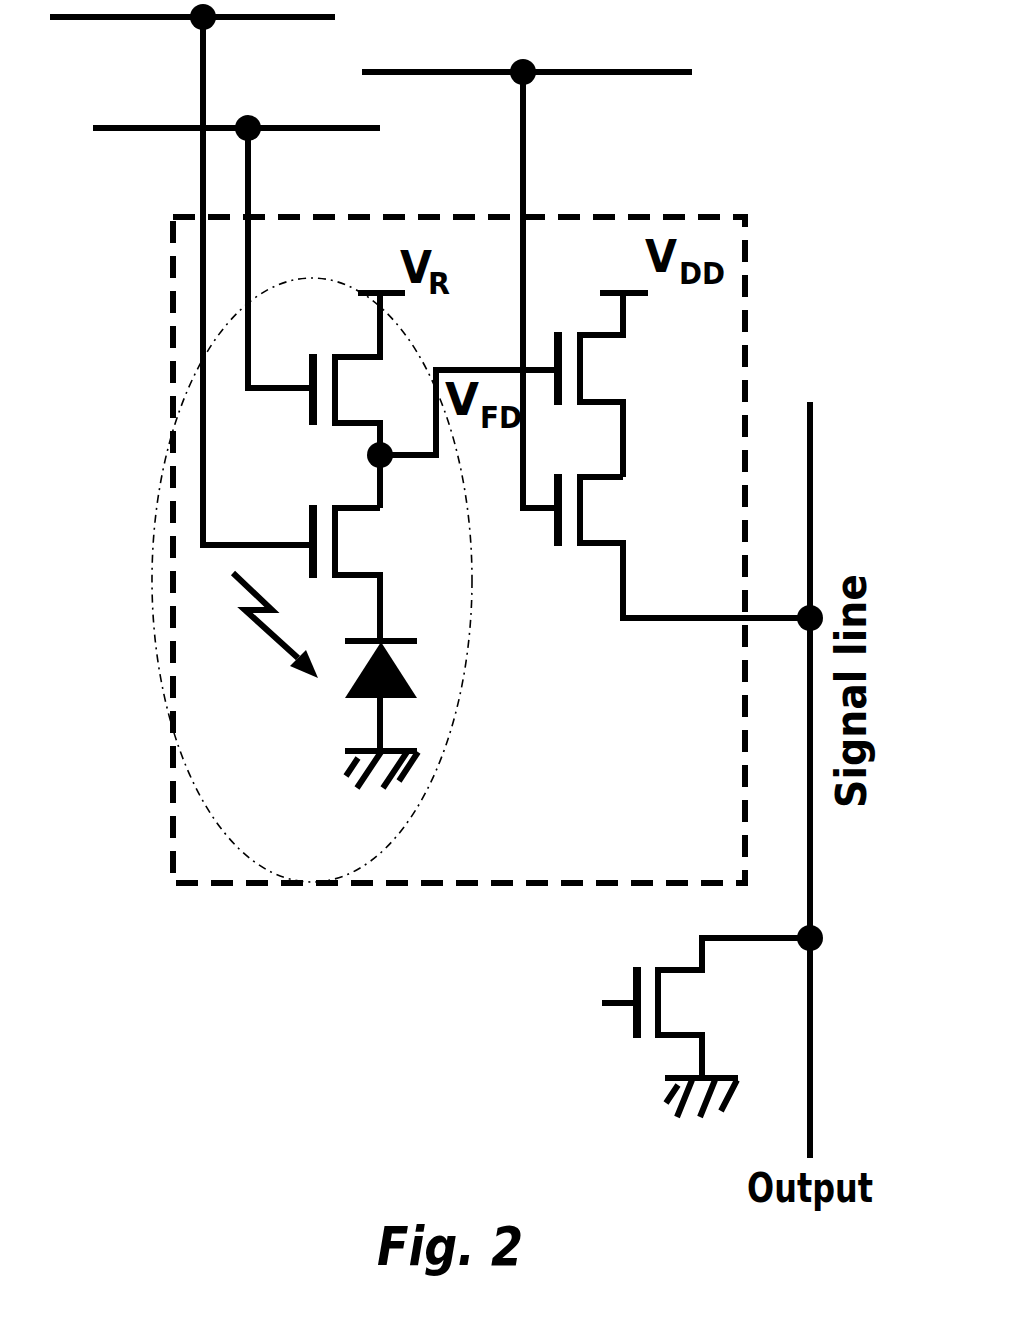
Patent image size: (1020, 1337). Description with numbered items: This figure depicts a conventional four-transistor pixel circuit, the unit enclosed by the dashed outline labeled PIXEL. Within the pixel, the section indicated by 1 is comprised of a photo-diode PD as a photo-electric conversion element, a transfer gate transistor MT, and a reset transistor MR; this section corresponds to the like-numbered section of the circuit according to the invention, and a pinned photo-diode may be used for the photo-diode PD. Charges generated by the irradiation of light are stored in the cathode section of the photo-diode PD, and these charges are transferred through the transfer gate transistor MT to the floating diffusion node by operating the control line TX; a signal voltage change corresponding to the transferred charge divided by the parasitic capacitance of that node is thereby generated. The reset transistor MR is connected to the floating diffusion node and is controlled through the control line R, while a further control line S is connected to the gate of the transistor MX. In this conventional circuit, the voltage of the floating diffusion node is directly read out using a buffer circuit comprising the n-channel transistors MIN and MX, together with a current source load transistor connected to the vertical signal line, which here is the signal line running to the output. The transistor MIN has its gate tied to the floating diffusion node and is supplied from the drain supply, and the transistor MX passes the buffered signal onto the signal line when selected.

The section comprising photo-diode, transfer gate transistor and reset transistor 1 is at (157, 672).
The control line TX is at (192, 274).
The reset control line R is at (236, 251).
The select control line S is at (527, 283).
The reset transistor MR is at (349, 400).
The transfer gate transistor MT is at (328, 547).
The n-channel transistor MIN is at (644, 385).
The n-channel transistor MX is at (684, 546).
The photo-diode PD is at (417, 714).
The pixel PIXEL is at (459, 550).